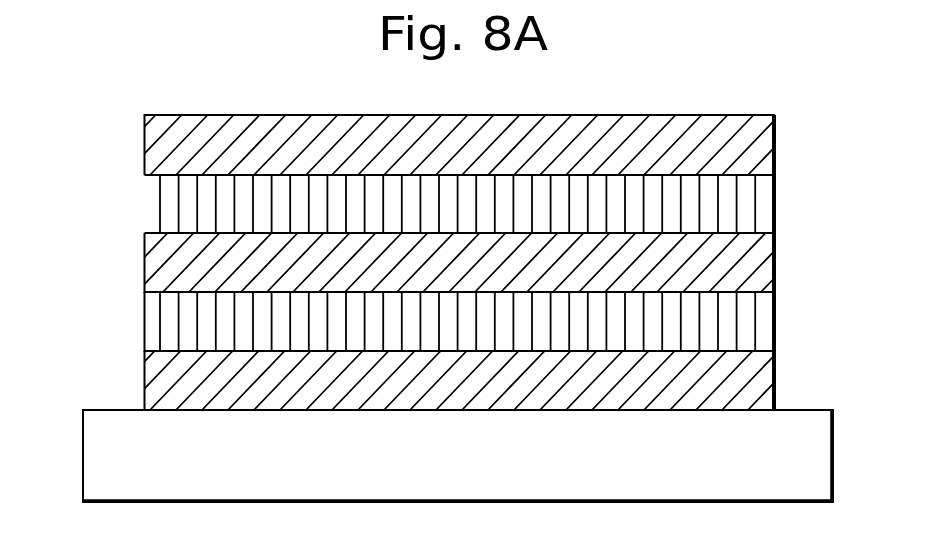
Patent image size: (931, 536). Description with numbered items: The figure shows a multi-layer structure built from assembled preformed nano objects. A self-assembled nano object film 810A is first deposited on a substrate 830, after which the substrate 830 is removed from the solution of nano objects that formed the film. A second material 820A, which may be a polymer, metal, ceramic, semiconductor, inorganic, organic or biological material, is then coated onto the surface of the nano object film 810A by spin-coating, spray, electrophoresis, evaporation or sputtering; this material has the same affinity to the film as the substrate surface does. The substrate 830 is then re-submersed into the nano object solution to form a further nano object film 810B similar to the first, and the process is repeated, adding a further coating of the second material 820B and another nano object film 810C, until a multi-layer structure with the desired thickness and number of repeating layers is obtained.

The self-assembled nano object film 810A is at (755, 381).
The nano object film 810B is at (762, 260).
The nano object film layer 810C is at (762, 143).
The second material 820A is at (167, 323).
The second material layer 820B is at (165, 203).
The substrate 830 is at (482, 470).